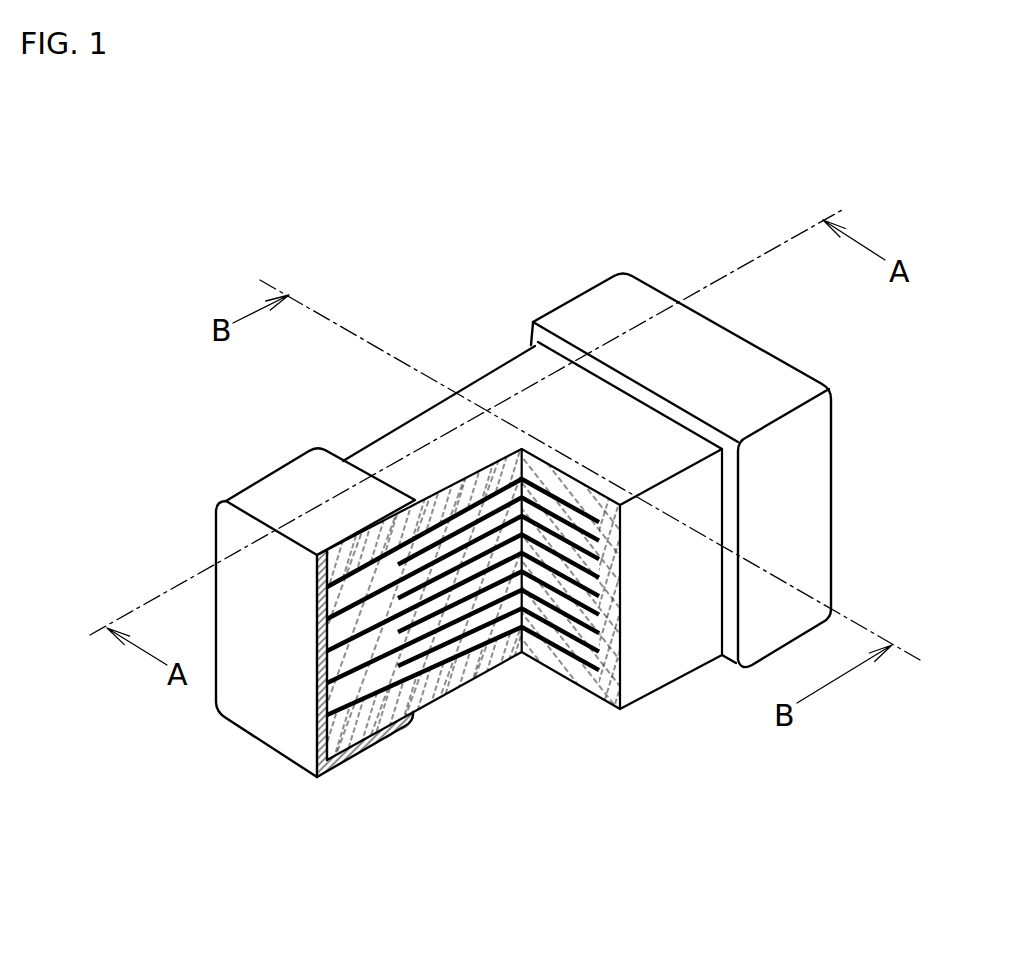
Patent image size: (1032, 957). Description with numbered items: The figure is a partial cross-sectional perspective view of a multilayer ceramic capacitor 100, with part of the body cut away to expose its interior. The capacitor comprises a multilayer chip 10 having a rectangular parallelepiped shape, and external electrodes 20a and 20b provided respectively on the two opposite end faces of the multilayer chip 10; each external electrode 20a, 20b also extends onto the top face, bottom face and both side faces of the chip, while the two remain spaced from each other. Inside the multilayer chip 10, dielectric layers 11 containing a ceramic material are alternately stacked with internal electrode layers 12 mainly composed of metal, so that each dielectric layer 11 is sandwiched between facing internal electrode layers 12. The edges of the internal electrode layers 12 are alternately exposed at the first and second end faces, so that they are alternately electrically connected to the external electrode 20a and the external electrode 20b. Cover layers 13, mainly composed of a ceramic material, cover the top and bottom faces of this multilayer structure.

The multilayer ceramic capacitor 100 is at (935, 203).
The multilayer chip 10 is at (362, 442).
The dielectric layer 11 is at (485, 617).
The internal electrode layer 12 is at (500, 648).
The cover layer 13 is at (492, 387).
The external electrode 20a is at (247, 486).
The external electrode 20b is at (580, 313).